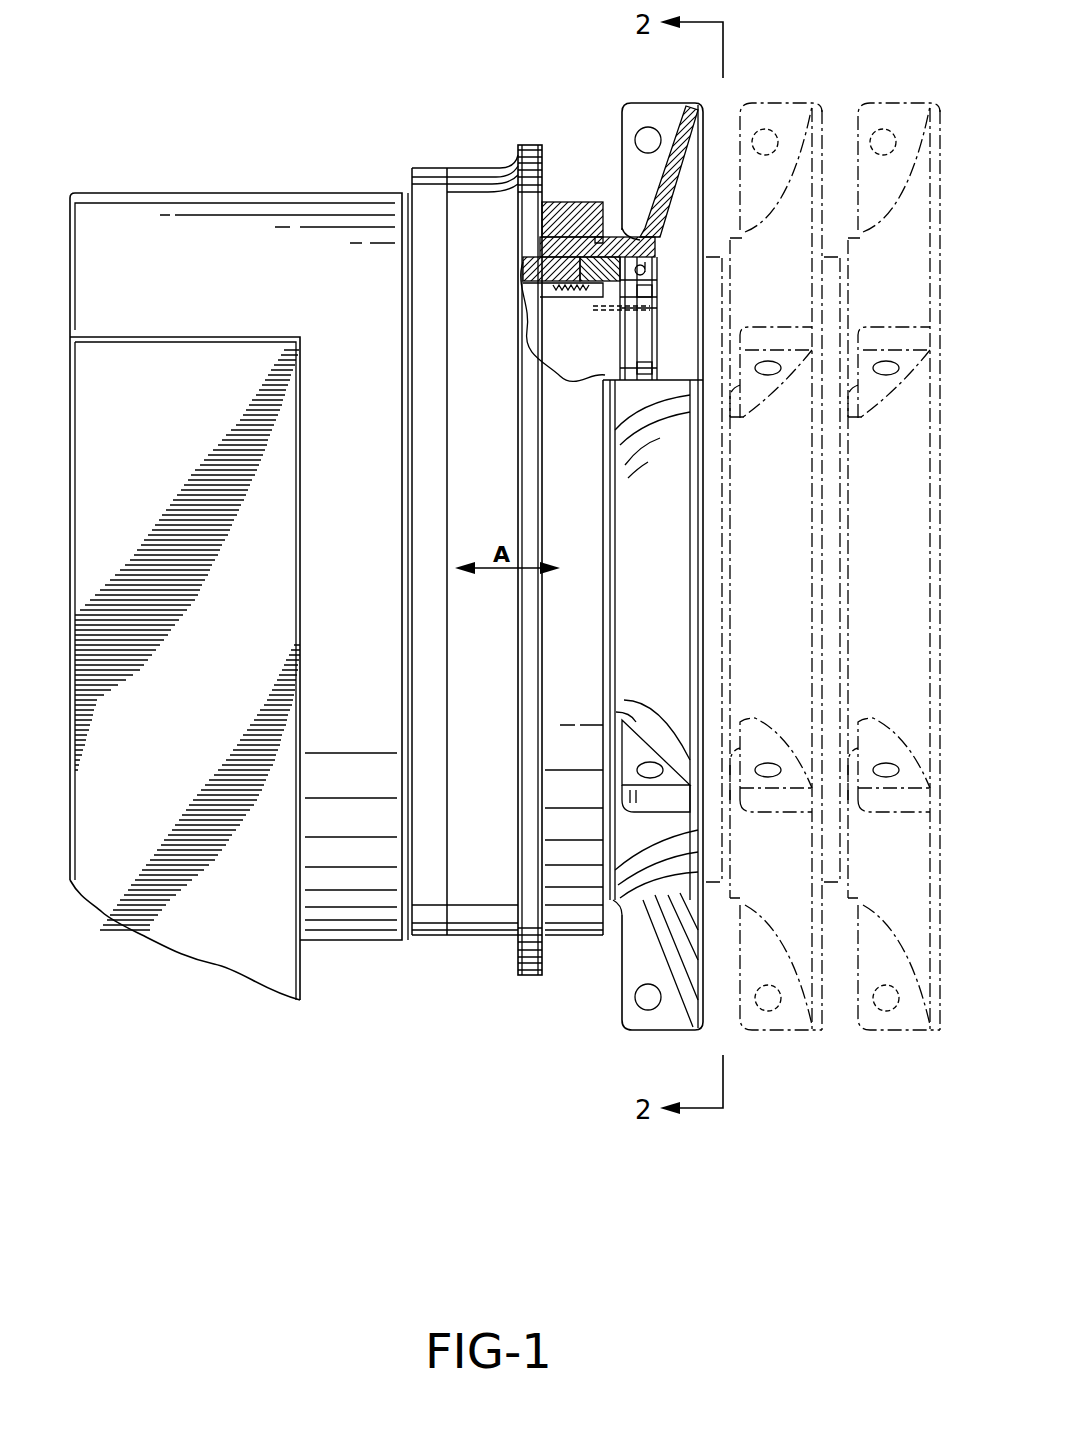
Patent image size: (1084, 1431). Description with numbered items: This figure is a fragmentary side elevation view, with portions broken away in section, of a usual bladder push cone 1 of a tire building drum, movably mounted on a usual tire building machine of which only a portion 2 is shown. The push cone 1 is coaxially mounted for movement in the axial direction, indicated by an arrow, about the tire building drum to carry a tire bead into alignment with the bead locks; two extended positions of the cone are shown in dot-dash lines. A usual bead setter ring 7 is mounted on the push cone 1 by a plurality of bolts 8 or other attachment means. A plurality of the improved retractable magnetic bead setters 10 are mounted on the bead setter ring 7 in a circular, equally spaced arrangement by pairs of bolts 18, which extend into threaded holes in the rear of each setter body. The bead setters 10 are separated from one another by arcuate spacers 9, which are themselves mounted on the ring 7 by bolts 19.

The bladder push cone 1 is at (651, 112).
The portion of tire building machine 2 is at (222, 950).
The bead setter ring 7 is at (592, 360).
The bolts 8 is at (592, 287).
The arcuate spacers 9 is at (640, 333).
The bead setter 10 is at (658, 370).
The bolts 18 is at (593, 275).
The bolts 19 is at (596, 312).